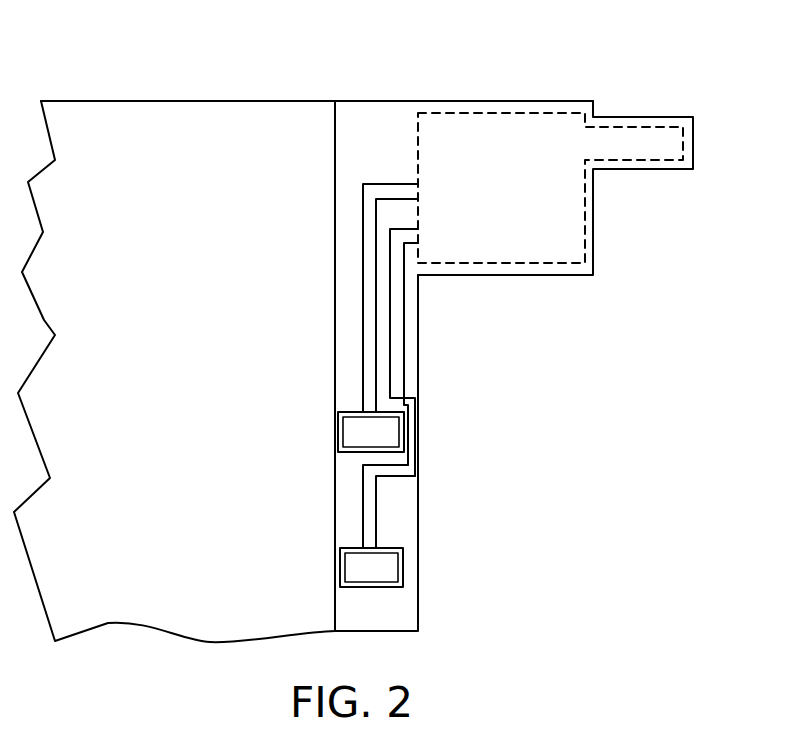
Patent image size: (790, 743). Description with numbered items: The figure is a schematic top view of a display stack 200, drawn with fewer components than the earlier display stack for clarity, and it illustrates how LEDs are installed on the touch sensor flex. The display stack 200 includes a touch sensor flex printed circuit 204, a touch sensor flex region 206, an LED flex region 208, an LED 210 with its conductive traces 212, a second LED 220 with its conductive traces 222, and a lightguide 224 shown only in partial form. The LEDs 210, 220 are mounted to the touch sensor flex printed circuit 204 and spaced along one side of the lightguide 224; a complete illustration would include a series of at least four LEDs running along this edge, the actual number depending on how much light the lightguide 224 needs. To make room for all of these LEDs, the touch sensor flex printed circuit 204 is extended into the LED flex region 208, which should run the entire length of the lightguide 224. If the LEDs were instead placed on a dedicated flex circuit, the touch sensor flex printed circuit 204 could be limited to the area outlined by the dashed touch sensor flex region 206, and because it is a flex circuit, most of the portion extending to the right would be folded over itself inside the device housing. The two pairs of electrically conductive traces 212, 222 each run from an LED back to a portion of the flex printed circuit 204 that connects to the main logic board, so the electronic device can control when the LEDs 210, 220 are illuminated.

The display stack 200 is at (342, 60).
The touch sensor flex printed circuit 204 is at (633, 117).
The touch sensor flex region 206 is at (660, 140).
The LED flex region 208 is at (597, 283).
The LED 210 is at (348, 412).
The conductive traces 212 is at (377, 341).
The LED 220 is at (347, 548).
The conductive traces 222 is at (365, 503).
The lightguide 224 is at (212, 171).